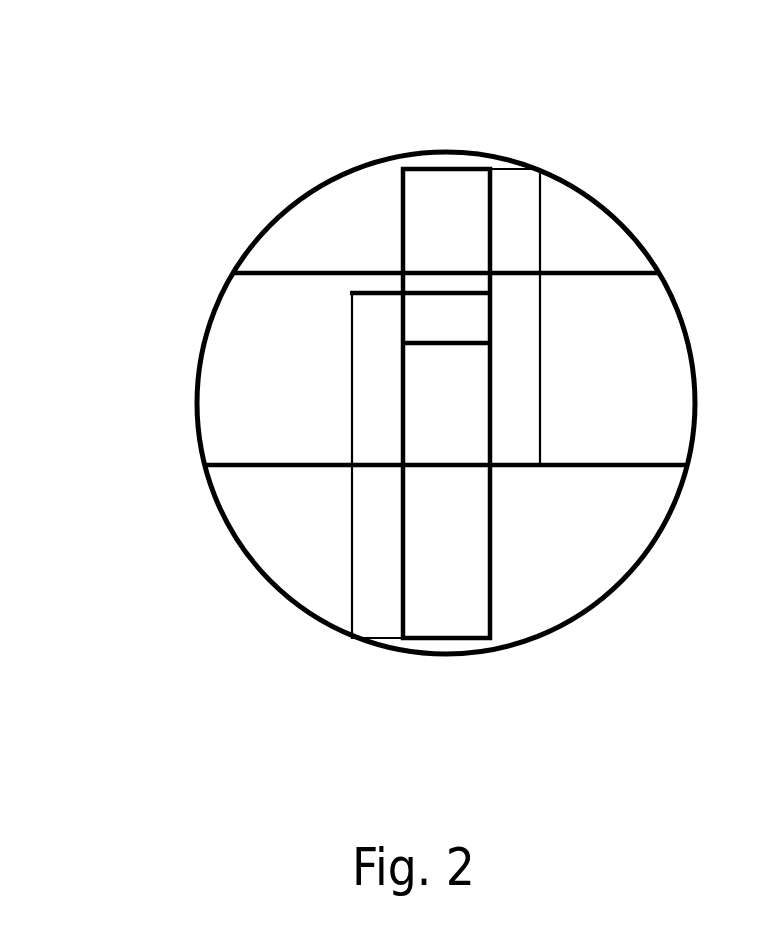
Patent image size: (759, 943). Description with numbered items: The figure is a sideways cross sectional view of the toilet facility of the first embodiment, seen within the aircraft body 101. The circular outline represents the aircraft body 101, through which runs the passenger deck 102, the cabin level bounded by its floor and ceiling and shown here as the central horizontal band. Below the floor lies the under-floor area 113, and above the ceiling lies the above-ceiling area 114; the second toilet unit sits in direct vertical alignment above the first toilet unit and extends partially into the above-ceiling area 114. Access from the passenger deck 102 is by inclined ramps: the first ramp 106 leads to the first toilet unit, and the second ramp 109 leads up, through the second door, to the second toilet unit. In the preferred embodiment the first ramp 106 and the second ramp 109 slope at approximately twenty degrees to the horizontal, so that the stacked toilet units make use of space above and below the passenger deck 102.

The aircraft body 101 is at (648, 169).
The passenger deck 102 is at (225, 366).
The first ramp 106 is at (376, 593).
The second ramp 109 is at (520, 202).
The under-floor area 113 is at (263, 561).
The above-ceiling area 114 is at (294, 224).